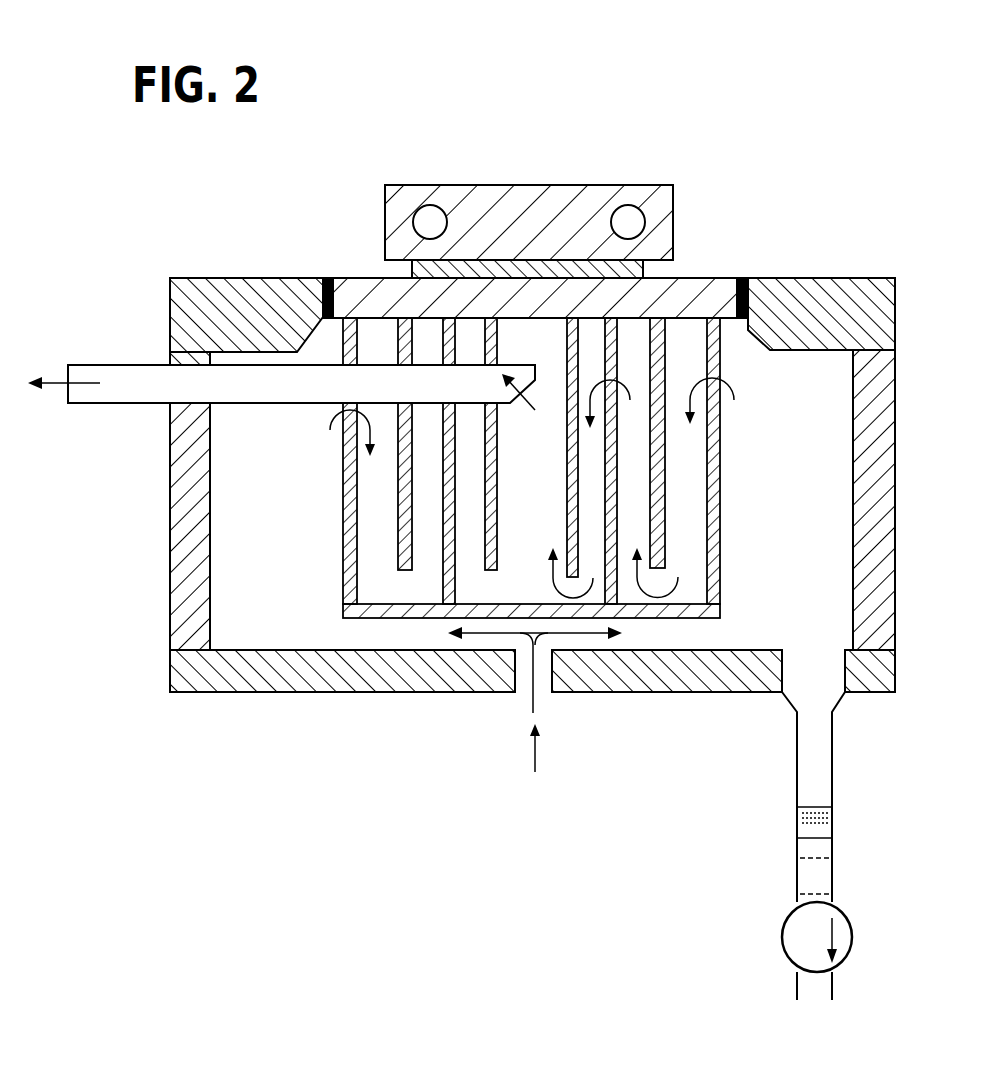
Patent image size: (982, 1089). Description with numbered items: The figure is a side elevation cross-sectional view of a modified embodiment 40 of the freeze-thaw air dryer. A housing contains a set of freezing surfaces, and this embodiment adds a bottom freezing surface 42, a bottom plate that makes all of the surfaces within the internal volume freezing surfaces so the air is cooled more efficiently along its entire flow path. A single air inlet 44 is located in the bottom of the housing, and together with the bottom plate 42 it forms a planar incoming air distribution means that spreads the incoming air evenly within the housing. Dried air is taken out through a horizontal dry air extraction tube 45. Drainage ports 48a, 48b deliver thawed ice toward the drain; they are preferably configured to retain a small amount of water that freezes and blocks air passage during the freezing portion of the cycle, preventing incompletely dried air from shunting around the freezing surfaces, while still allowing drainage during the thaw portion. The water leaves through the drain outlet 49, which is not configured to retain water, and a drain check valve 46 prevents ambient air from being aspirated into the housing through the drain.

The modified embodiment of freeze-thaw air dryer 40 is at (195, 785).
The bottom freezing surface 42 is at (372, 619).
The air inlet 44 is at (520, 694).
The horizontal dry air extraction tube 45 is at (138, 405).
The drain check valve 46 is at (789, 917).
The drainage port 48a is at (620, 593).
The drainage port 48b is at (700, 593).
The drain outlet 49 is at (782, 672).